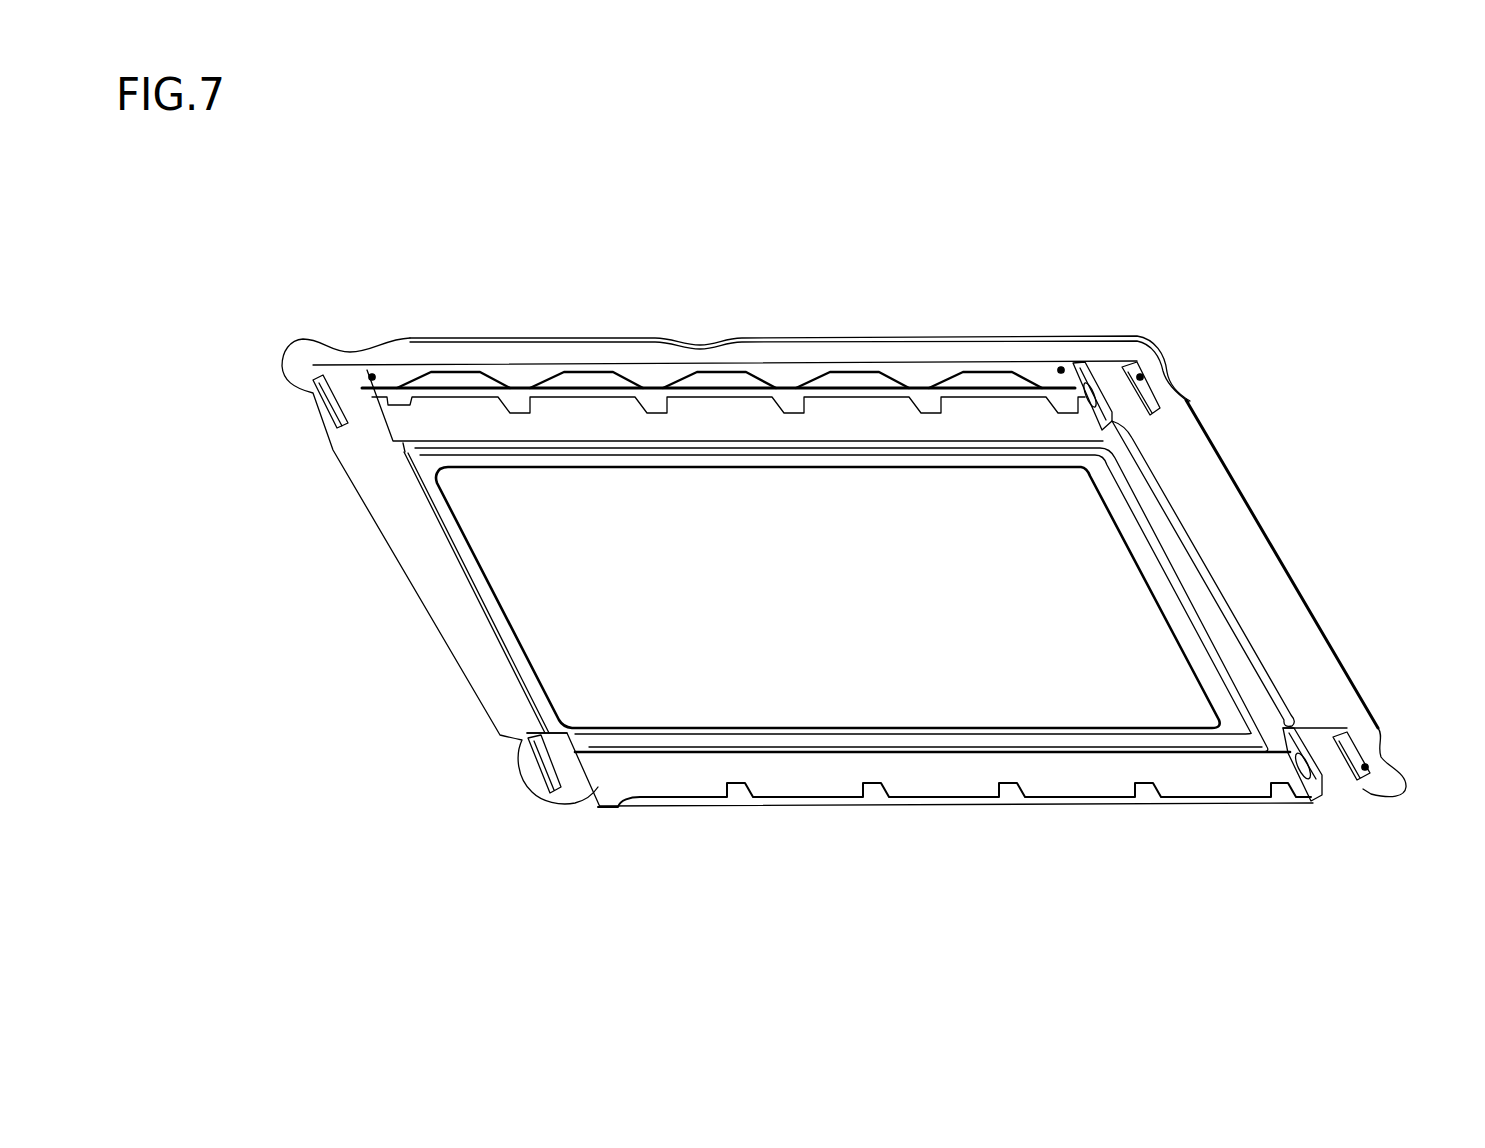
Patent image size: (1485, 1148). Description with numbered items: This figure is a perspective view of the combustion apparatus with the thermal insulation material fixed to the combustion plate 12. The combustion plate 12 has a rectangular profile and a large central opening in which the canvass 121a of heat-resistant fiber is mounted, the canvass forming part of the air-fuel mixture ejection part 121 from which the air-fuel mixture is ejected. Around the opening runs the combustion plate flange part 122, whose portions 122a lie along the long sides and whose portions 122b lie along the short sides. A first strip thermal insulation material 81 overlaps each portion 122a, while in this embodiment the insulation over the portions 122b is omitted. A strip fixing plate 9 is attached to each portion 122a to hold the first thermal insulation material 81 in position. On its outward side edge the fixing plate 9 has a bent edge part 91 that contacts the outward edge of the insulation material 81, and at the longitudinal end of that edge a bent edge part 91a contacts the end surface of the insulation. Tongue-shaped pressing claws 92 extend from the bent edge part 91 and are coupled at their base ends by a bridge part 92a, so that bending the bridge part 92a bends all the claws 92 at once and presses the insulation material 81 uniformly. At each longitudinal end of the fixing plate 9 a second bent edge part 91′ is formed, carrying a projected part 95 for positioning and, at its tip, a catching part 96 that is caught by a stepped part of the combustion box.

The combustion plate 12 is at (1228, 440).
The combustion plate flange part 122 is at (725, 350).
The portion of the combustion plate flange part along the first opposite sides 122a is at (905, 349).
The portion of the combustion plate flange part along the second opposite sides 122b is at (442, 607).
The air-fuel mixture ejection part 121 is at (937, 730).
The canvass 121a is at (1060, 665).
The fixing plate 9 is at (787, 359).
The bent edge part 91 is at (653, 373).
The bent edge part 91a is at (1090, 387).
The second bent edge part 91′ is at (1148, 404).
The pressing claw 92 is at (524, 411).
The bridge part 92a is at (582, 393).
The projected part 95 is at (372, 374).
The catching part 96 is at (333, 417).
The first strip thermal insulation material 81 is at (850, 420).